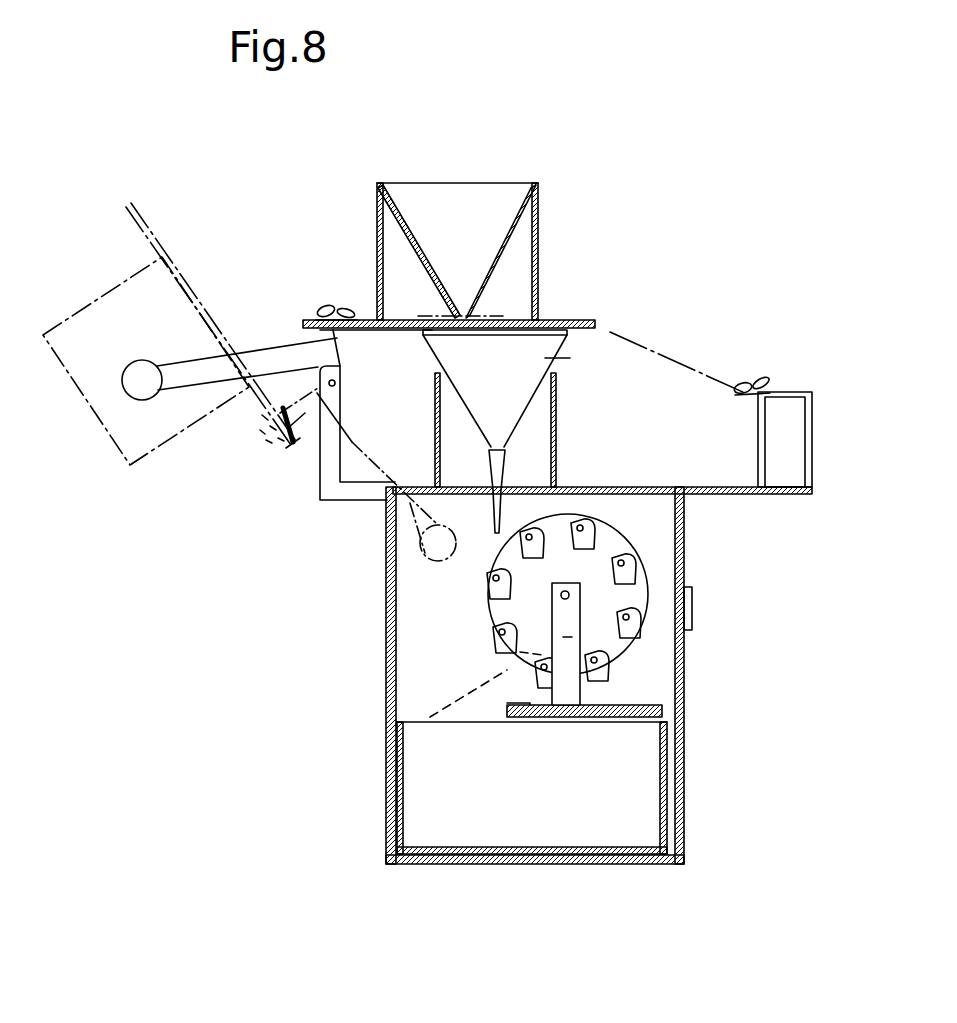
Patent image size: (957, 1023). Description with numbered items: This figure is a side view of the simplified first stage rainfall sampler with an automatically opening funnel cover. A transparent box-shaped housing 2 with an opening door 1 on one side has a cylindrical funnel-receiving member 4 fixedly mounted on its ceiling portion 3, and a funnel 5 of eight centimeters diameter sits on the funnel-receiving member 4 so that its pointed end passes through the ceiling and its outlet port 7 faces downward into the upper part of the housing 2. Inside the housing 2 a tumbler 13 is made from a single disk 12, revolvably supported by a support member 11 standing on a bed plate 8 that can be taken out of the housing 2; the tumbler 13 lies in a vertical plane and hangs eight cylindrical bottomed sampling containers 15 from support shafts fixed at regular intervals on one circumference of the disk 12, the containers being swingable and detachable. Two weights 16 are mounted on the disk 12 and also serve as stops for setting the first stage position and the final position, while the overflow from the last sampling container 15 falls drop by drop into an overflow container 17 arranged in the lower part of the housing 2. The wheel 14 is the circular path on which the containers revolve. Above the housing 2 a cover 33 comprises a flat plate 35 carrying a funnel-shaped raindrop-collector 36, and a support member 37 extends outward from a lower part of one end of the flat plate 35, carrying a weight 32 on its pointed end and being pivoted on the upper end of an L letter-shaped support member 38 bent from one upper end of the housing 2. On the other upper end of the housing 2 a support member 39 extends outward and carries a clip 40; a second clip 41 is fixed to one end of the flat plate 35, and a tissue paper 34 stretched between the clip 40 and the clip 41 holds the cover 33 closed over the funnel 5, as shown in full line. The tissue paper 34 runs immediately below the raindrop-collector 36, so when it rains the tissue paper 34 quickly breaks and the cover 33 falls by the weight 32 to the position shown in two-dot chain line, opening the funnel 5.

The opening door 1 is at (688, 582).
The housing 2 is at (384, 645).
The ceiling portion 3 is at (645, 487).
The funnel-receiving member 4 is at (557, 430).
The funnel 5 is at (567, 345).
The outlet port 7 is at (486, 541).
The bed plate 8 is at (655, 700).
The support member 11 is at (600, 712).
The disk 12 is at (428, 613).
The tumbler 13 is at (552, 598).
The rotary wheel 14 is at (497, 647).
The sampling container 15 is at (523, 547).
The weight 16 is at (382, 741).
The overflow container 17 is at (620, 814).
The weight 32 is at (144, 400).
The cover 33 is at (548, 228).
The tissue paper 34 is at (638, 340).
The flat plate 35 is at (388, 328).
The raindrop-collector 36 is at (493, 250).
The support member 37 is at (266, 347).
The L letter-shaped support member 38 is at (320, 476).
The support member 39 is at (819, 440).
The clip 40 is at (751, 372).
The clip 41 is at (336, 305).